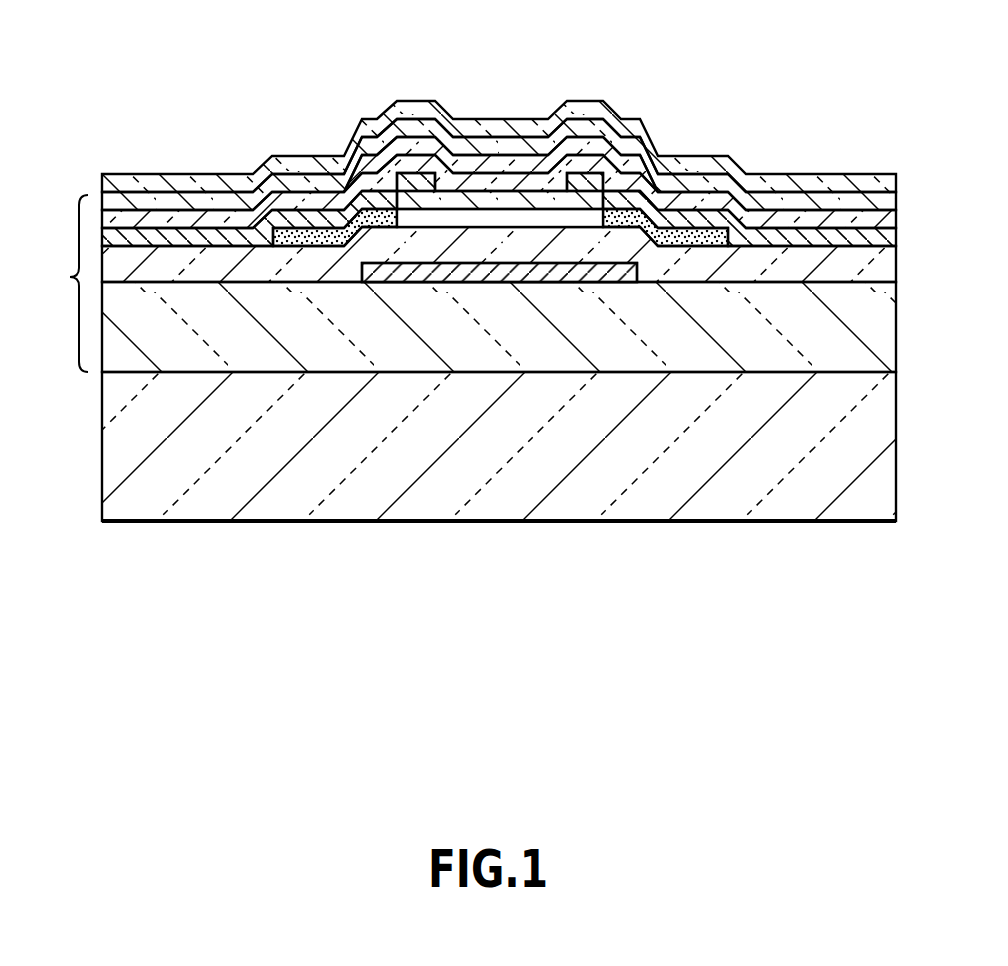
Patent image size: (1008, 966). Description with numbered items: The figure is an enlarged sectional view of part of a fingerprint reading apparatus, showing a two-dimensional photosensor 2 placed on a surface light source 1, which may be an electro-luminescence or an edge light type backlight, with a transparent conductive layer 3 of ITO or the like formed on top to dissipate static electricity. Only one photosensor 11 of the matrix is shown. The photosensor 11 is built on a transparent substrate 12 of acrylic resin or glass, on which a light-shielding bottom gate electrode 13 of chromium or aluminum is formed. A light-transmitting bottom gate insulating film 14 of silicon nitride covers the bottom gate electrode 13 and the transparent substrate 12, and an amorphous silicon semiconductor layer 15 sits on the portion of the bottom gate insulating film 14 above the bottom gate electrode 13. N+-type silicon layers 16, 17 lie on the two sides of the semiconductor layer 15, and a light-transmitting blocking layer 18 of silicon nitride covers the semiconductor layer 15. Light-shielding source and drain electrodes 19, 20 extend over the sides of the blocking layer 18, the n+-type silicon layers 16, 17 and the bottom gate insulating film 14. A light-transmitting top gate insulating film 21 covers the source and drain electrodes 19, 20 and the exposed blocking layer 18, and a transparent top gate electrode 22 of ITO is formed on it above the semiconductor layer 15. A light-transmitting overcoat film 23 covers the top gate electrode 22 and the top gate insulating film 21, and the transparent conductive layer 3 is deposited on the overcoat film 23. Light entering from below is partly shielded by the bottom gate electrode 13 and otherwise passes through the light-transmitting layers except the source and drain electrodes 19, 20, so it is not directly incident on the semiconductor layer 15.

The surface light source 1 is at (164, 530).
The two-dimensional photosensor 2 is at (67, 283).
The transparent conductive layer 3 is at (178, 177).
The photosensor 11 is at (393, 297).
The transparent substrate 12 is at (860, 330).
The bottom gate electrode 13 is at (460, 283).
The bottom gate insulating film 14 is at (793, 267).
The semiconductor layer 15 is at (528, 223).
The n+-type silicon layer 16 is at (687, 260).
The n+-type silicon layer 17 is at (303, 243).
The blocking layer 18 is at (582, 203).
The source electrode 19 is at (698, 215).
The drain electrode 20 is at (293, 217).
The top gate insulating film 21 is at (790, 215).
The top gate electrode 22 is at (485, 160).
The overcoat film 23 is at (865, 196).